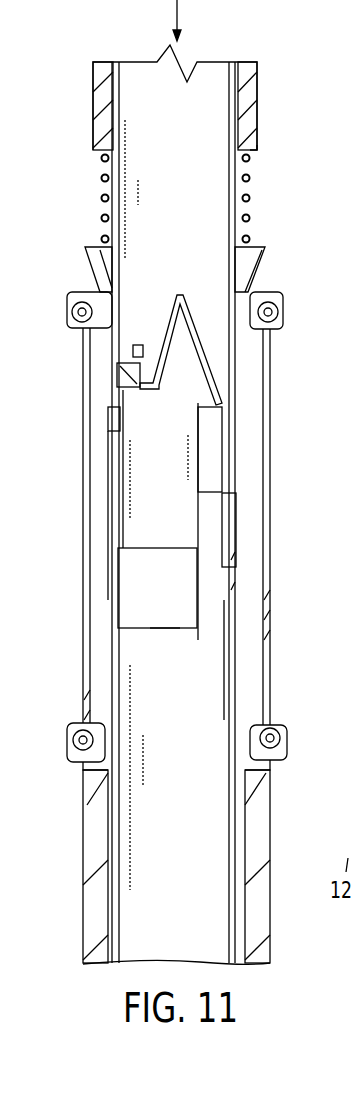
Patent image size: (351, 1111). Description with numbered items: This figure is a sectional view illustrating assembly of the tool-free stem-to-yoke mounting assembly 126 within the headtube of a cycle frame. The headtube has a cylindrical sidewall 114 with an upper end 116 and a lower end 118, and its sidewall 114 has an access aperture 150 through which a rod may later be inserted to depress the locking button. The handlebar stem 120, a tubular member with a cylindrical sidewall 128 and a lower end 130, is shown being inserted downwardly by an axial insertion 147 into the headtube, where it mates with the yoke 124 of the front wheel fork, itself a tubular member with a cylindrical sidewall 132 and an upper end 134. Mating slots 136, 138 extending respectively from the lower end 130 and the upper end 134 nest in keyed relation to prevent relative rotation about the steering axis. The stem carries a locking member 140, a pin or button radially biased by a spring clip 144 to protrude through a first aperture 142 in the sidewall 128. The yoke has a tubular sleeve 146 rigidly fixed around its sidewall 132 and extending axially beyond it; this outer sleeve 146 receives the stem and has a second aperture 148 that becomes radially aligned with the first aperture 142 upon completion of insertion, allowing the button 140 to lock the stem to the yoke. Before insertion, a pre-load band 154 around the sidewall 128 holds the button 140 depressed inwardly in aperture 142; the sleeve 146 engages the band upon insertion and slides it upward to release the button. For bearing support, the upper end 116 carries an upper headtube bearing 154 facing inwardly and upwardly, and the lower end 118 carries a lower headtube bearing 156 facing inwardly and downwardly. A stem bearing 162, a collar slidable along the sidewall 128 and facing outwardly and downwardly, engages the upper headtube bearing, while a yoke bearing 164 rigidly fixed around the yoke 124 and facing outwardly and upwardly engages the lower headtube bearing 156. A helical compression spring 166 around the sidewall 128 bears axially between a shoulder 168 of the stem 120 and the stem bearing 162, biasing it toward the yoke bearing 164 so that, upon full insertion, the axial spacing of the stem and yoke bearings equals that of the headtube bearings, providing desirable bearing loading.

The axial insertion 147 is at (179, 12).
The stem 120 is at (93, 115).
The cylindrical sidewall 128 is at (227, 197).
The shoulder 168 is at (257, 150).
The helical compression spring 166 is at (248, 198).
The stem bearing 162 is at (268, 259).
The upper end 116 is at (68, 318).
The pre-load band 154 is at (262, 293).
The cylindrical sidewall 114 is at (82, 562).
The tubular sleeve 146 is at (93, 681).
The locking member 140 is at (137, 344).
The spring clip 144 is at (187, 292).
The first aperture 142 is at (112, 382).
The access aperture 150 is at (82, 442).
The second aperture 148 is at (110, 470).
The stem-to-yoke mounting assembly 126 is at (177, 448).
The mating slot 136 is at (208, 458).
The upper end 134 is at (210, 494).
The lower end 130 is at (152, 551).
The mating slot 138 is at (150, 628).
The cylindrical sidewall 132 is at (227, 677).
The lower headtube bearing 156 is at (275, 725).
The lower end 118 is at (73, 767).
The yoke bearing 164 is at (270, 766).
The yoke 124 is at (82, 933).